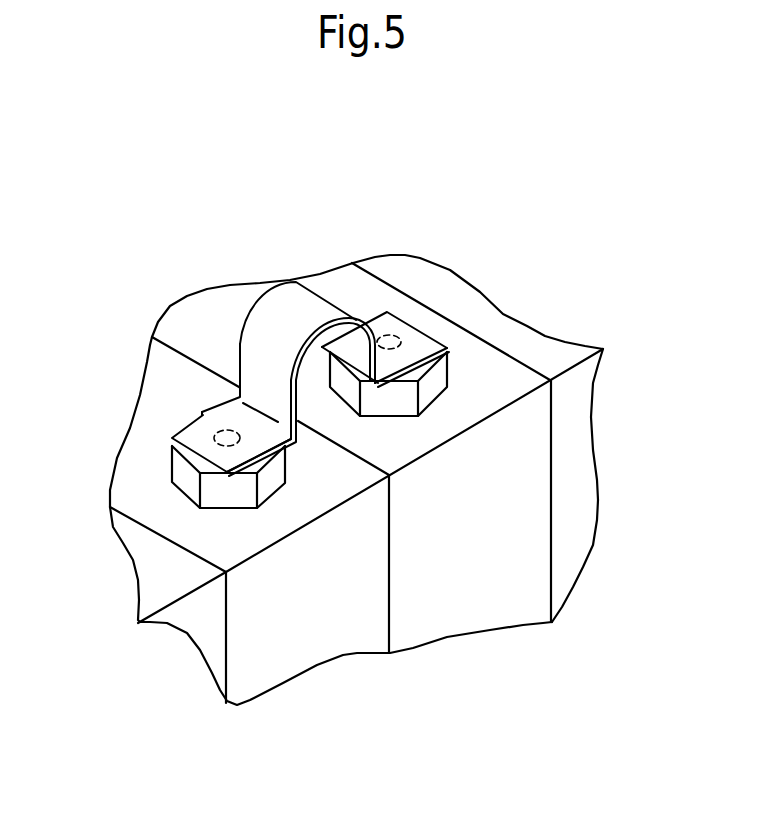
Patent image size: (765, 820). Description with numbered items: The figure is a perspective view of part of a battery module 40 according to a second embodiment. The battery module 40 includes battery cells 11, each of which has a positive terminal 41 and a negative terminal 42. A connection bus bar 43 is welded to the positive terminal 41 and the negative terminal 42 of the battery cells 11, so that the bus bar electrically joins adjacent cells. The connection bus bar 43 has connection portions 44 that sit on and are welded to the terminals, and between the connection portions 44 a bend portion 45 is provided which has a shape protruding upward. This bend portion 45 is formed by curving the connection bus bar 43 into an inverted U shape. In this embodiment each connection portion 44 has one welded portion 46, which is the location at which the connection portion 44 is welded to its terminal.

The battery cell 11 is at (375, 524).
The battery module 40 is at (346, 451).
The positive terminal 41 is at (169, 471).
The negative terminal 42 is at (446, 353).
The connection bus bar 43 is at (305, 333).
The connection portion 44 is at (305, 375).
The bend portion 45 is at (288, 333).
The welded portion 46 is at (272, 328).